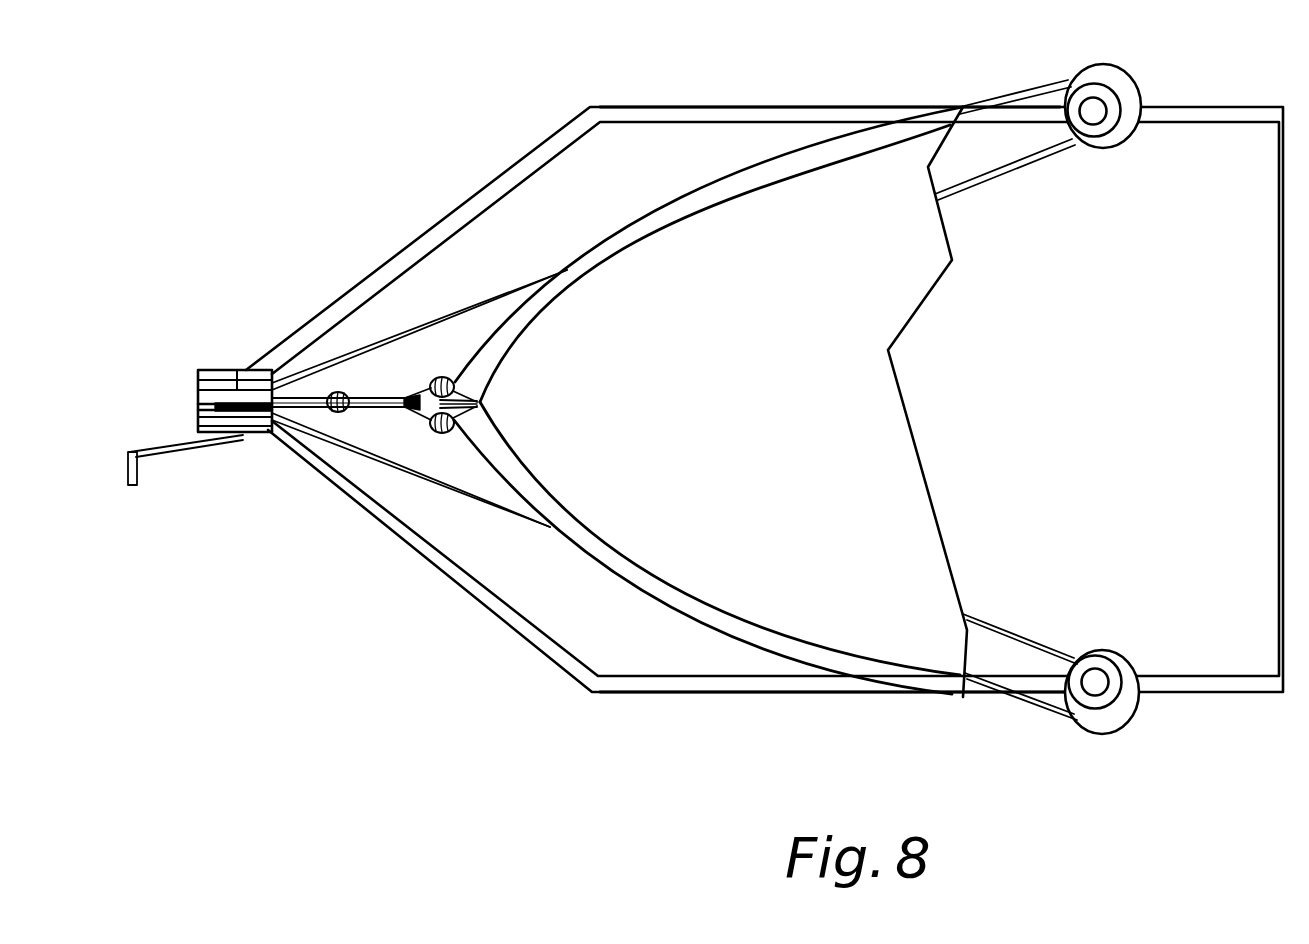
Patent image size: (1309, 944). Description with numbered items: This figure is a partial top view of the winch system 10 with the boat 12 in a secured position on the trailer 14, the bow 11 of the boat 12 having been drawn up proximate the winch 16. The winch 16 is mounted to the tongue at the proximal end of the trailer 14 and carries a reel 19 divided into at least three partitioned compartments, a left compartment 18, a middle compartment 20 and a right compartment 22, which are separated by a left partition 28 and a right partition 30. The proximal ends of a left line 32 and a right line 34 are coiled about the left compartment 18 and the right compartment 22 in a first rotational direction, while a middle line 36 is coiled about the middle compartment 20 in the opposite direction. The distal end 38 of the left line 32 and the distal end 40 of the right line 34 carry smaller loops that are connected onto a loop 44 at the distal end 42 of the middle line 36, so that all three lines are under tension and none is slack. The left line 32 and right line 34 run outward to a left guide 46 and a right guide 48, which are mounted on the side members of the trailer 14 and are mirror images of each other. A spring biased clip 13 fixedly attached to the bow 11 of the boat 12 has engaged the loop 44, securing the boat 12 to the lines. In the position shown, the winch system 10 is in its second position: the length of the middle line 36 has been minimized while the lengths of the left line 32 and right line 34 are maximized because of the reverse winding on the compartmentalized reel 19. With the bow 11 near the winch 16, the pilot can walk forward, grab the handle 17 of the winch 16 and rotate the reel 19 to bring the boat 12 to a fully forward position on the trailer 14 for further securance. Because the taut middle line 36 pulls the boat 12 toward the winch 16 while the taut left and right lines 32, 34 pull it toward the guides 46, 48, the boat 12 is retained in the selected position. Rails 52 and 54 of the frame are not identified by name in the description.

The winch system 10 is at (557, 542).
The bow 11 is at (485, 434).
The boat 12 is at (873, 425).
The spring biased clip 13 is at (470, 385).
The trailer 14 is at (1246, 100).
The winch 16 is at (221, 456).
The handle 17 is at (128, 472).
The left compartment 18 is at (188, 429).
The reel 19 is at (200, 360).
The middle compartment 20 is at (188, 406).
The right compartment 22 is at (188, 377).
The left partition 28 is at (262, 416).
The right partition 30 is at (237, 385).
The left line 32 is at (430, 480).
The right line 34 is at (397, 333).
The middle line 36 is at (293, 400).
The distal end of the left line 38 is at (429, 421).
The distal end of the right line 40 is at (434, 341).
The distal end of the middle line 42 is at (322, 407).
The loop 44 is at (382, 407).
The left guide 46 is at (1125, 707).
The right guide 48 is at (1108, 75).
The lower frame rail 52 is at (727, 680).
The upper frame rail 54 is at (779, 107).